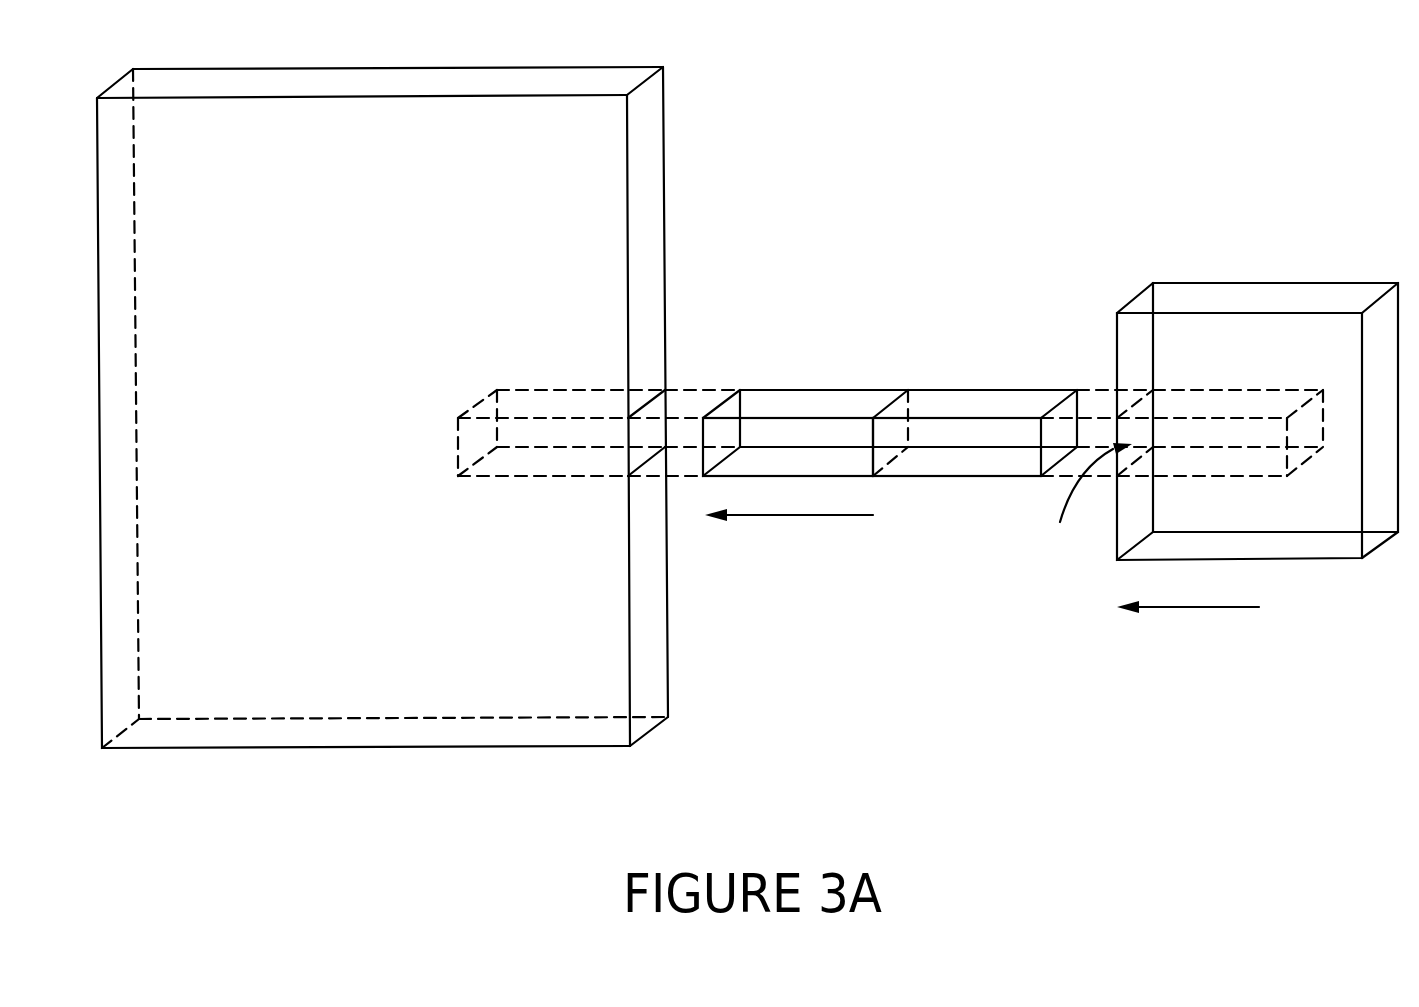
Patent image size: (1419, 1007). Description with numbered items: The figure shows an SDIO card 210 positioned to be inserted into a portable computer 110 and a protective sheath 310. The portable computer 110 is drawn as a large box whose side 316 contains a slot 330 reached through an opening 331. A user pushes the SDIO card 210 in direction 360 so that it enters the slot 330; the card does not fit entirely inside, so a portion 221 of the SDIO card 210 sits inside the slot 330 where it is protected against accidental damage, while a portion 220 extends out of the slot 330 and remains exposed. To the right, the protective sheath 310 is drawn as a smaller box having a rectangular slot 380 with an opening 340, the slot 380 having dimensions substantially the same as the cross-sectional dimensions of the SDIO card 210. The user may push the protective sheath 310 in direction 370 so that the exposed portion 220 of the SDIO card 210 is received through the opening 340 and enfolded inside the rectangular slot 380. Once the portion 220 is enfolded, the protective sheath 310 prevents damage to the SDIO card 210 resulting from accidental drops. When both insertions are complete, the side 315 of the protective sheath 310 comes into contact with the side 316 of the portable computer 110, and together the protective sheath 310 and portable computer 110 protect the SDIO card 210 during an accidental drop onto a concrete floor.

The portable computer 110 is at (418, 407).
The side of portable computer 316 is at (645, 258).
The opening 331 is at (672, 430).
The slot 330 is at (497, 479).
The SDIO card 210 is at (890, 422).
The portion of SDIO card 221 is at (740, 392).
The exposed portion of SDIO card 220 is at (873, 476).
The insertion direction 360 is at (778, 515).
The protective sheath 310 is at (1210, 384).
The side of protective sheath 315 is at (1133, 361).
The rectangular slot 380 is at (1228, 474).
The opening of rectangular slot 340 is at (1088, 499).
The sheath movement direction 370 is at (1192, 607).